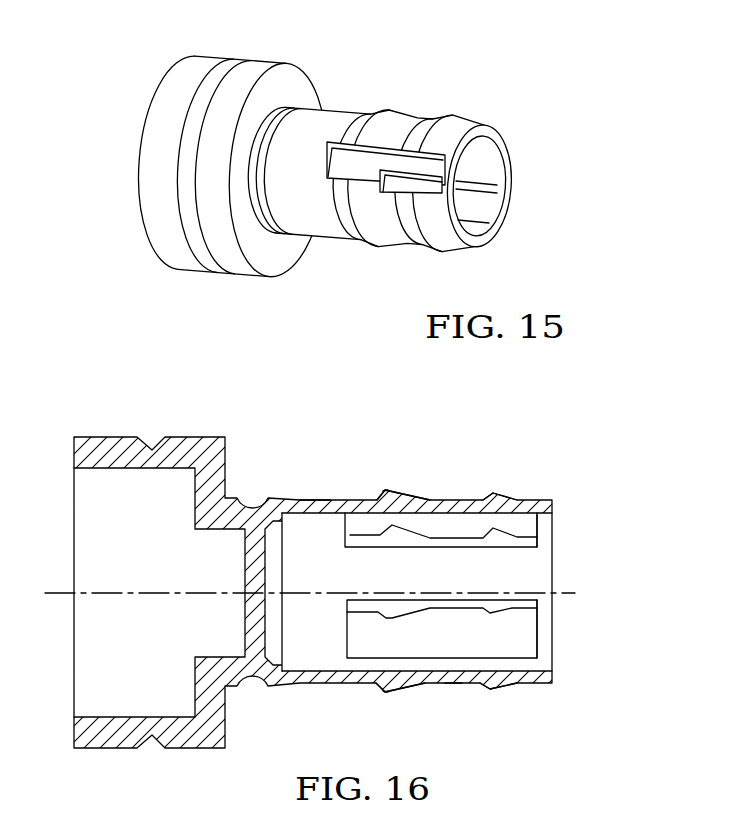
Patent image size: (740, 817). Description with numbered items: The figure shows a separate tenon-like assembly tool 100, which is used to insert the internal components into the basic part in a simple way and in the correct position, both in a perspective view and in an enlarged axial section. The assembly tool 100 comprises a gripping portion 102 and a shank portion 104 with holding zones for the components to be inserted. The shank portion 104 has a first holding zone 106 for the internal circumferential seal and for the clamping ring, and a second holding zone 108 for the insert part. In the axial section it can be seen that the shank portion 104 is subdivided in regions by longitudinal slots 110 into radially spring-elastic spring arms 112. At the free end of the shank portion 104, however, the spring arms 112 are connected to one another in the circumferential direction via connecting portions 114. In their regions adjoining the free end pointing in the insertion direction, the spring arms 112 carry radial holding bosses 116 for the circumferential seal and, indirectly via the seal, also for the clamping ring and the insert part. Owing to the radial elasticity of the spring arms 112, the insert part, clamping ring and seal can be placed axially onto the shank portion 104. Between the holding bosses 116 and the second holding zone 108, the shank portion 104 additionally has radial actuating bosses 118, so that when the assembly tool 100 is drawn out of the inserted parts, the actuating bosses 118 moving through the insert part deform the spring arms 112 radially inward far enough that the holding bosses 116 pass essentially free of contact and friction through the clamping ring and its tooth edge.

In FIG. 15, the assembly tool 100 is at (368, 64).
In FIG. 16, the assembly tool 100 is at (283, 445).
In FIG. 15, the gripping portion 102 is at (232, 257).
In FIG. 16, the gripping portion 102 is at (105, 436).
In FIG. 15, the shank portion 104 is at (327, 220).
In FIG. 16, the shank portion 104 is at (324, 686).
In FIG. 16, the first holding zone 106 is at (452, 694).
In FIG. 16, the second holding zone 108 is at (314, 490).
In FIG. 15, the longitudinal slots 110 is at (395, 164).
In FIG. 16, the longitudinal slots 110 is at (427, 523).
In FIG. 15, the spring arms 112 is at (412, 133).
In FIG. 16, the spring arms 112 is at (450, 565).
In FIG. 16, the connecting portions 114 is at (547, 540).
In FIG. 16, the holding bosses 116 is at (493, 497).
In FIG. 16, the actuating bosses 118 is at (393, 489).